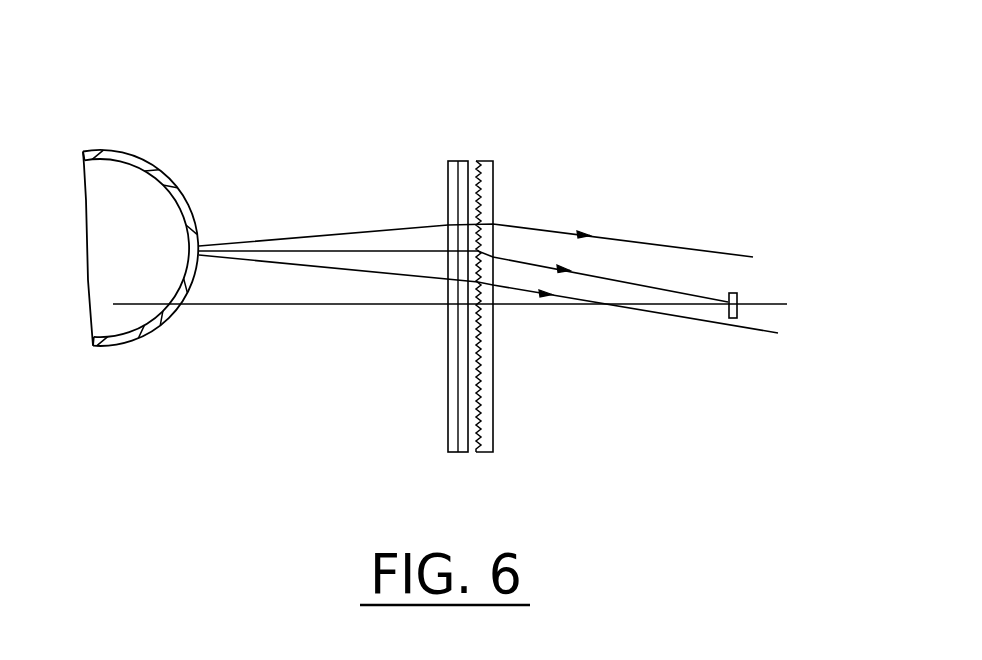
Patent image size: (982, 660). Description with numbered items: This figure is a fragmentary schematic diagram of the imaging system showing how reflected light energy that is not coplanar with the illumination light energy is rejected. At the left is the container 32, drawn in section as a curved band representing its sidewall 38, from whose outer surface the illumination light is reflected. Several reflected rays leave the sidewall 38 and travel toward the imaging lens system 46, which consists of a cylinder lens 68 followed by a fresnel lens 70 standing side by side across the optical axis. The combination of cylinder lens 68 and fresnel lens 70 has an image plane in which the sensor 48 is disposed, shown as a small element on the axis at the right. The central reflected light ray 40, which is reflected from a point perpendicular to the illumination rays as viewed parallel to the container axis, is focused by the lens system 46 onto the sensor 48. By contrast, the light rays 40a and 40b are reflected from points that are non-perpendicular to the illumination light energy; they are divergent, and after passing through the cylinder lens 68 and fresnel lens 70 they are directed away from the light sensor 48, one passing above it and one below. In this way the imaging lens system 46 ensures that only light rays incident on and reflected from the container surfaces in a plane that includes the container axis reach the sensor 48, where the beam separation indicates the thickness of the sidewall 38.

The container 32 is at (141, 154).
The container sidewall 38 is at (145, 330).
The reflected light beam 40 is at (307, 250).
The divergent light ray 40a is at (382, 225).
The divergent light ray 40b is at (370, 273).
The imaging lens system 46 is at (472, 250).
The sensor 48 is at (737, 293).
The cylinder lens 68 is at (450, 415).
The fresnel lens 70 is at (490, 413).